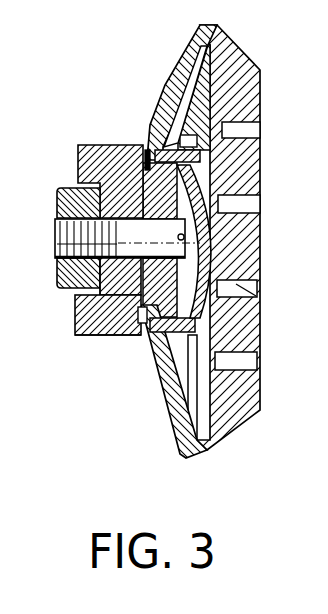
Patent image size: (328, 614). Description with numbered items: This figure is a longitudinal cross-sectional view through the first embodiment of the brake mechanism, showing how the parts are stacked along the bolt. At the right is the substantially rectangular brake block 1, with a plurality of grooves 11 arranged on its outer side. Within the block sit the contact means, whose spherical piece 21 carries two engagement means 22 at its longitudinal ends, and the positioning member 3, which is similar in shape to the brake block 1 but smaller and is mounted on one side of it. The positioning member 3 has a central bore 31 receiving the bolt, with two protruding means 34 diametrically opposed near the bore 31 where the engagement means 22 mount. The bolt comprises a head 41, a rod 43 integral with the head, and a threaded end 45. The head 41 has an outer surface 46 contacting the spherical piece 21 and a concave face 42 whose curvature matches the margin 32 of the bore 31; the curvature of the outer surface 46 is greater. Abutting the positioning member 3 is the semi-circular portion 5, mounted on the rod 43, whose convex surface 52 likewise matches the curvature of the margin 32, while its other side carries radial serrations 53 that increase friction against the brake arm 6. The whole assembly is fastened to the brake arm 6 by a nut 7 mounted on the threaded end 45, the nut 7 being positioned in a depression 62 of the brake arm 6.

The brake block 1 is at (263, 77).
The positioning member 3 is at (178, 66).
The semi-circular portion 5 is at (148, 158).
The brake arm 6 is at (75, 333).
The nut 7 is at (57, 273).
The grooves 11 is at (263, 129).
The spherical piece 21 is at (214, 281).
The engagement means 22 is at (218, 382).
The bore 31 is at (147, 168).
The margin 32 is at (139, 312).
The protruding means 34 is at (201, 158).
The head 41 is at (215, 248).
The concave face 42 is at (209, 229).
The rod 43 is at (120, 281).
The threaded end 45 is at (80, 313).
The outer surface 46 is at (256, 296).
The convex surface 52 is at (137, 201).
The radial serrations 53 is at (137, 334).
The depression 62 is at (78, 186).